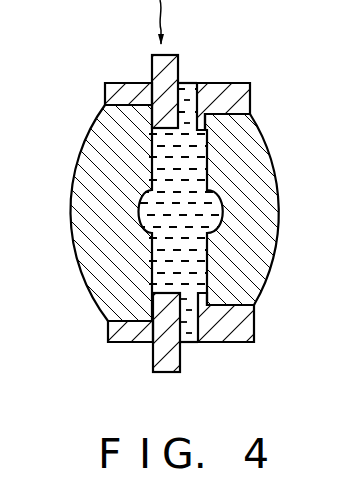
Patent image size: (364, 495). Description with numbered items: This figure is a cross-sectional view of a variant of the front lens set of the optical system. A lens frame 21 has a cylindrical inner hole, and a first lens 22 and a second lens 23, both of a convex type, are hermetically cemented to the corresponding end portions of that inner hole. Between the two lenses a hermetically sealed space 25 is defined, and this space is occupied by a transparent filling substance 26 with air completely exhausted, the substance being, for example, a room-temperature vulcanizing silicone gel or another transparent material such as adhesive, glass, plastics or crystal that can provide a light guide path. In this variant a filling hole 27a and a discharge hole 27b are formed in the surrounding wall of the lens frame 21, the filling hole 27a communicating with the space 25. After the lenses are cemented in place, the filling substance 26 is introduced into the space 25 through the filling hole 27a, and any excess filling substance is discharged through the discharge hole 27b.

The lens frame 21 is at (152, 68).
The first lens 22 is at (88, 172).
The second lens 23 is at (275, 257).
The hermetically sealed space 25 is at (150, 251).
The filling substance 26 is at (208, 143).
The filling hole 27a is at (177, 89).
The discharge hole 27b is at (192, 332).